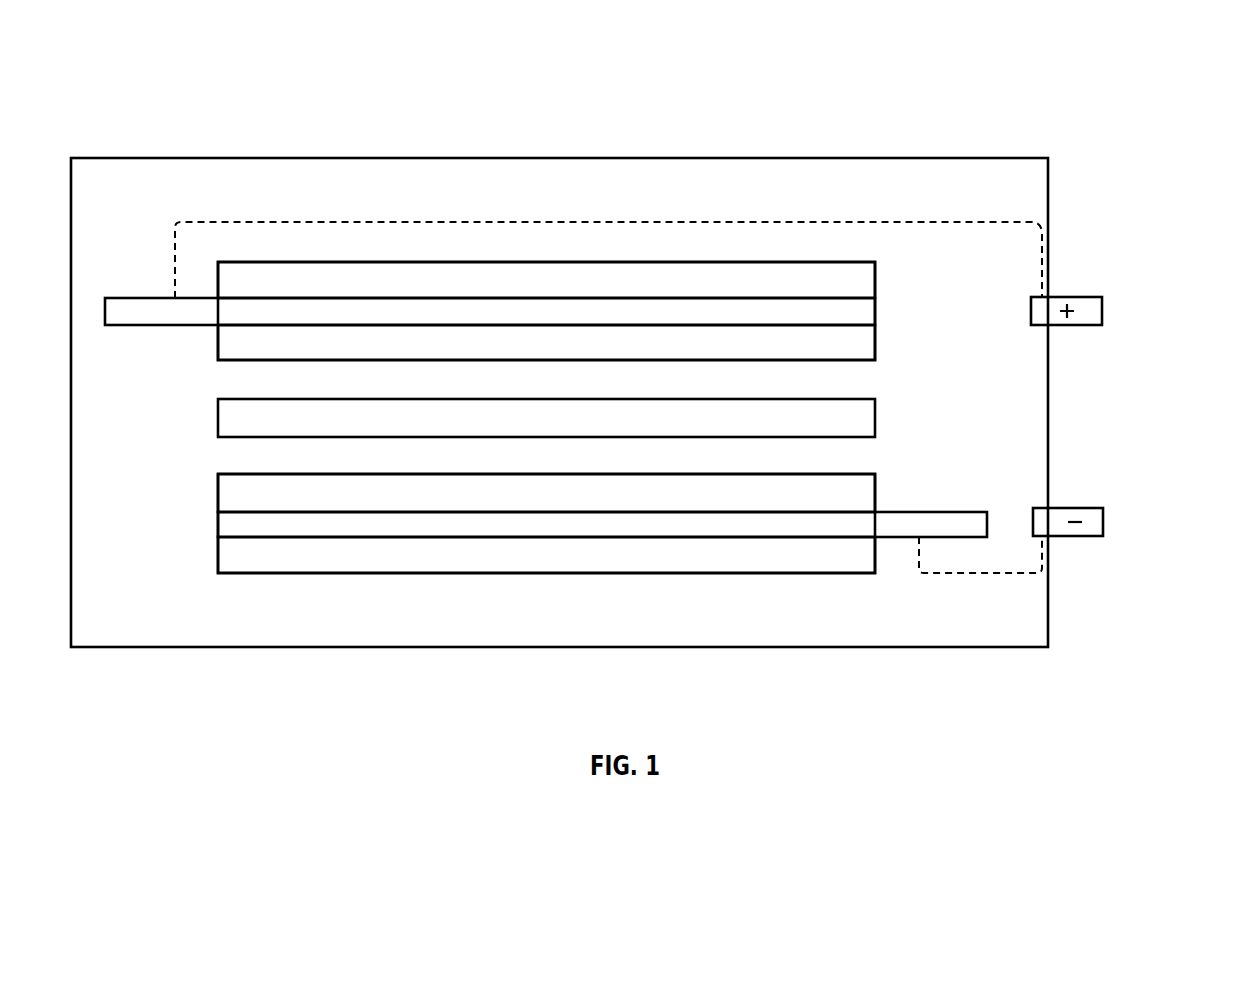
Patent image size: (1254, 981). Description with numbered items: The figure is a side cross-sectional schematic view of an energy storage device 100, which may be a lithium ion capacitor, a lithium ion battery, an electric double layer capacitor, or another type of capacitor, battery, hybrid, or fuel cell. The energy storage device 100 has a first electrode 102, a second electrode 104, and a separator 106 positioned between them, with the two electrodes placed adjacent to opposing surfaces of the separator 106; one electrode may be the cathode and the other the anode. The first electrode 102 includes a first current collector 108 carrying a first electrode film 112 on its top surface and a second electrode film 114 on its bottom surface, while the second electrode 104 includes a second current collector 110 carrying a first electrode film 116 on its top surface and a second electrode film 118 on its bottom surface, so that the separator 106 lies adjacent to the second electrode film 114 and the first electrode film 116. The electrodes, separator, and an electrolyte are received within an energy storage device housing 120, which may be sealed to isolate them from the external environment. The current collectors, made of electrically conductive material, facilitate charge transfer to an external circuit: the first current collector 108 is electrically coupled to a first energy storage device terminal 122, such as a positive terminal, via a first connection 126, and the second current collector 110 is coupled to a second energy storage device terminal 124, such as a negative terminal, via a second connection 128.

The energy storage device 100 is at (125, 106).
The first electrode 102 is at (953, 262).
The second electrode 104 is at (133, 473).
The separator 106 is at (875, 413).
The first current collector 108 is at (848, 310).
The second current collector 110 is at (222, 524).
The first electrode film 112 is at (850, 277).
The second electrode film 114 is at (848, 348).
The first electrode film 116 is at (222, 490).
The second electrode film 118 is at (222, 559).
The energy storage device housing 120 is at (842, 158).
The first energy storage device terminal 122 is at (1073, 297).
The second energy storage device terminal 124 is at (1067, 536).
The first connection 126 is at (178, 224).
The second connection 128 is at (918, 576).